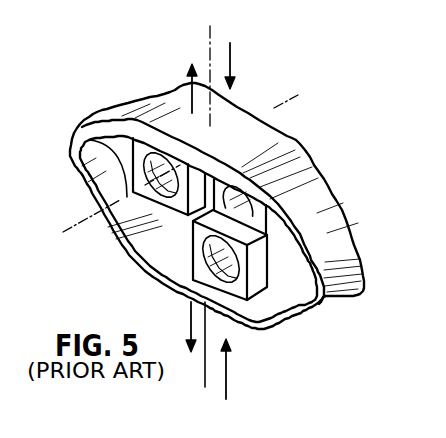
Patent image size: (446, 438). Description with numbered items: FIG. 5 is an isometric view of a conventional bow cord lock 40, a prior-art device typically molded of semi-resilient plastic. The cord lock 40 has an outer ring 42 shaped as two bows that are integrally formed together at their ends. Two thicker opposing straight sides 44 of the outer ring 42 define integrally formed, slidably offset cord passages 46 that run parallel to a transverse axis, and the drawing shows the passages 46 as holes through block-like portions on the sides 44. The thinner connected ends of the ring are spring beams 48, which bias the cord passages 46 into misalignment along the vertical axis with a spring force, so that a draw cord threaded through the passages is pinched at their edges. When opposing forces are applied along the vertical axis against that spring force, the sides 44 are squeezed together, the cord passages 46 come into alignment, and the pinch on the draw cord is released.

The conventional bow cord lock 40 is at (48, 173).
The outer ring 42 is at (305, 192).
The straight sides 44 is at (230, 127).
The cord passages 46 is at (118, 220).
The spring beams 48 is at (107, 110).